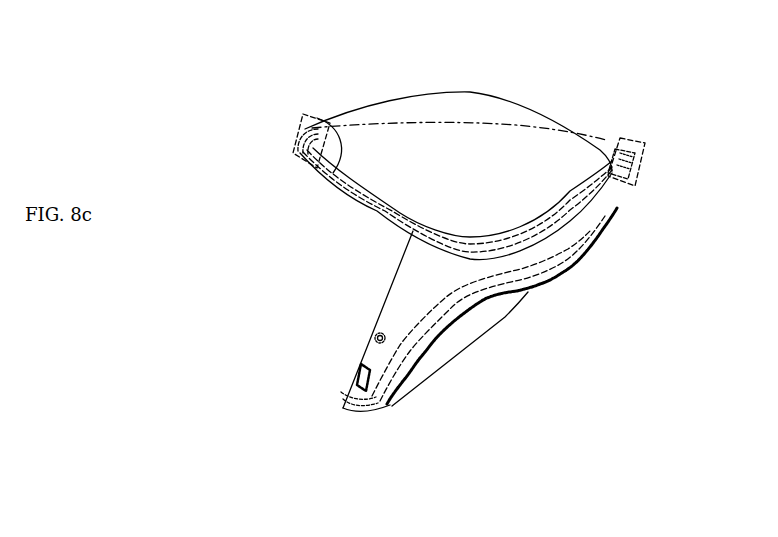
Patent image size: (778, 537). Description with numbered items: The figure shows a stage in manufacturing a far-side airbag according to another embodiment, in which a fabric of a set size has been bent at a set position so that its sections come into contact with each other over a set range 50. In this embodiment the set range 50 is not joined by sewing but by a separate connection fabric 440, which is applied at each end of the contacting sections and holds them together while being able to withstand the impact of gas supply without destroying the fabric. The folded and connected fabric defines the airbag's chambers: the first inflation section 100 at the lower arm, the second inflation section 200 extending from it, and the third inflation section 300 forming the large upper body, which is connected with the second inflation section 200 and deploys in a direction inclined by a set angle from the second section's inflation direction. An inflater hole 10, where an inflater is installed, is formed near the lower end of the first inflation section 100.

The inflater hole 10 is at (352, 375).
The set range 50 is at (303, 116).
The first inflation section 100 is at (463, 333).
The second inflation section 200 is at (613, 192).
The third inflation section 300 is at (466, 92).
The connection fabric 440 is at (337, 165).